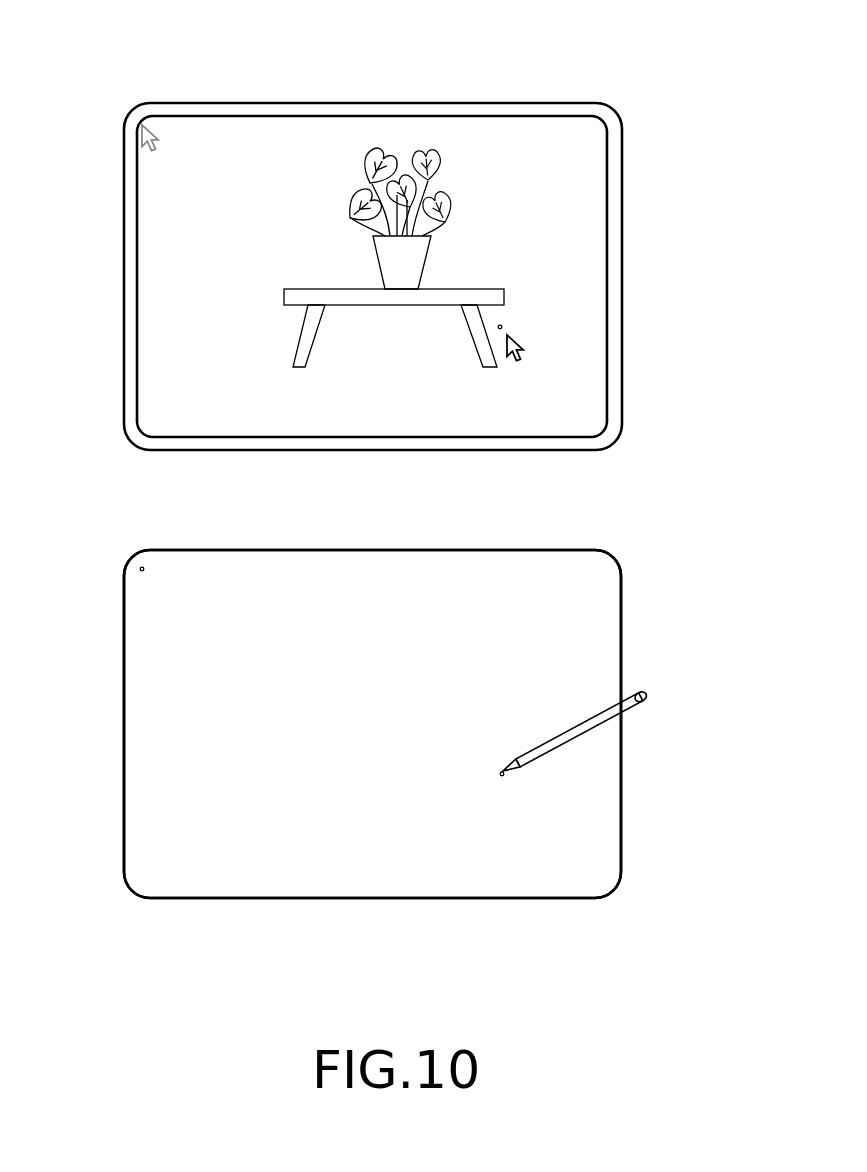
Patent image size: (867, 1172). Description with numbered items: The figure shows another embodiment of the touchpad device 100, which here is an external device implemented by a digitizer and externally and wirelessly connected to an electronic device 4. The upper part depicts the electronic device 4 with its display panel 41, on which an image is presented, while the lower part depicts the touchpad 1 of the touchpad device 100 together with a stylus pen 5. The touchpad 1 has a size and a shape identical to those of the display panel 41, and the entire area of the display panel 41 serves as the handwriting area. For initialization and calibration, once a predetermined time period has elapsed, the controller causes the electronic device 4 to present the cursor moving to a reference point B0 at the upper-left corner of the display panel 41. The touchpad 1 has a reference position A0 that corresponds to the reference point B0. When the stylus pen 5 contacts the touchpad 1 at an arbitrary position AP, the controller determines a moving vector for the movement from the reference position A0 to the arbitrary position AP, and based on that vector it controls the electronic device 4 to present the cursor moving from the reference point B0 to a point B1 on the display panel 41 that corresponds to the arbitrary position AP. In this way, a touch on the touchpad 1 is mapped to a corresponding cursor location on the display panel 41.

The electronic device 4 is at (621, 151).
The display panel 41 is at (582, 222).
The point B1 is at (503, 326).
The reference point B0 is at (140, 122).
The touchpad device 100 is at (622, 605).
The touchpad 1 is at (130, 733).
The reference position A0 is at (141, 567).
The stylus pen 5 is at (652, 694).
The arbitrary position AP is at (503, 777).